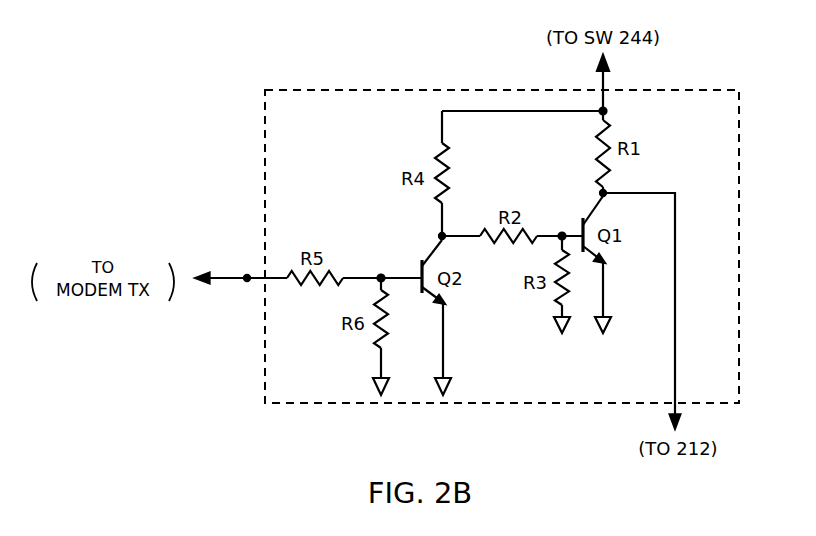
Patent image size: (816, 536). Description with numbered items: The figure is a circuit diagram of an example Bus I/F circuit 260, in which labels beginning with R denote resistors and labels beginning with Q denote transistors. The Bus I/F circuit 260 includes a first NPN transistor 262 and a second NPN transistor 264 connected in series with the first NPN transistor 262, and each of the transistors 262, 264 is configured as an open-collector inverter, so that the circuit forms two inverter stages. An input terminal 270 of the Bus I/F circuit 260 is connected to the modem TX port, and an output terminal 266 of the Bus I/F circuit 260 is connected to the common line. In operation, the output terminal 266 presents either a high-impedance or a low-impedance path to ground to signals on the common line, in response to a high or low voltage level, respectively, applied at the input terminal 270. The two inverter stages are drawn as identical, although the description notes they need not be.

The Bus I/F circuit 260 is at (686, 88).
The first NPN transistor 262 is at (437, 254).
The second NPN transistor 264 is at (565, 193).
The output terminal 266 is at (606, 192).
The input terminal 270 is at (247, 276).